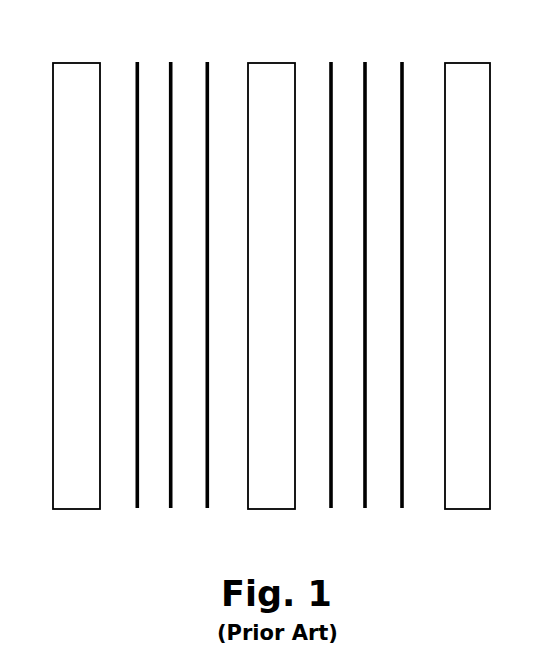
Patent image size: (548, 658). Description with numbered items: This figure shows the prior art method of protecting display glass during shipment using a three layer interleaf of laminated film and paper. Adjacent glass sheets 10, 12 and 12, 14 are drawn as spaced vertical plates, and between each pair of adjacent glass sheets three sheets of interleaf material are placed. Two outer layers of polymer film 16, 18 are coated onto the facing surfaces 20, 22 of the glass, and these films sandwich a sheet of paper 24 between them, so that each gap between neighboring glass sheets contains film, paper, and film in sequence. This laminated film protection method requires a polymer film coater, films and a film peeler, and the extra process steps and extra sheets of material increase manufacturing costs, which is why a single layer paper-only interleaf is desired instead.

The glass sheet 10 is at (82, 87).
The glass sheet 12 is at (267, 83).
The glass sheet 14 is at (460, 102).
The polymer film 16 is at (138, 485).
The polymer film 18 is at (208, 483).
The facing surface 20 is at (100, 305).
The facing surface 22 is at (248, 108).
The sheet of paper 24 is at (171, 488).